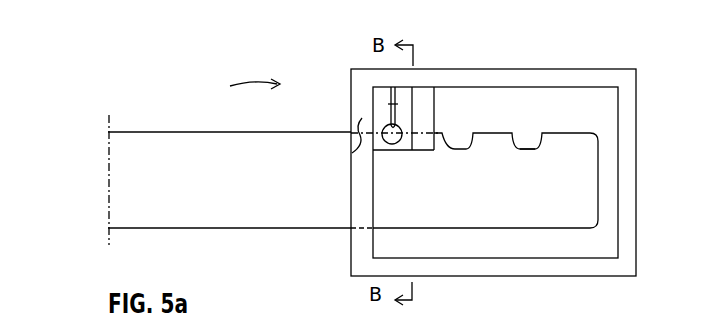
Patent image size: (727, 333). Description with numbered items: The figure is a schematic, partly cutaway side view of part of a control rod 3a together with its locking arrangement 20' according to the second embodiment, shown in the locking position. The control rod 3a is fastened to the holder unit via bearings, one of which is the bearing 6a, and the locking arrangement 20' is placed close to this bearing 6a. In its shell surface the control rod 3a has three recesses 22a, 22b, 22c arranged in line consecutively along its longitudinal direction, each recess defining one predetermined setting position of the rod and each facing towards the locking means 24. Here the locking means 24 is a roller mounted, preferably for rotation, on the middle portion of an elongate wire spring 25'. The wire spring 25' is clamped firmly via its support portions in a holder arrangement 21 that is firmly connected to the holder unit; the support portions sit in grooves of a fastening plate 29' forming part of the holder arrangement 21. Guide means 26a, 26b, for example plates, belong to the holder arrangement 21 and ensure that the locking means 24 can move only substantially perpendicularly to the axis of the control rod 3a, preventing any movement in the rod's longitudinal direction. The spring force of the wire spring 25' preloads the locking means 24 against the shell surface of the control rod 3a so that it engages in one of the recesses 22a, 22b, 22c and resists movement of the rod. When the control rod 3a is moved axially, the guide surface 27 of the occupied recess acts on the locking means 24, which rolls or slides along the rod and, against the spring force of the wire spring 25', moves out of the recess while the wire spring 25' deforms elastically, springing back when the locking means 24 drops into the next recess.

The control rod 3a is at (140, 140).
The bearing 6a is at (357, 229).
The locking arrangement 20' is at (238, 77).
The holder arrangement 21 is at (507, 73).
The recess 22a is at (403, 151).
The recess 22b is at (470, 144).
The recess 22c is at (545, 147).
The locking means 24 is at (383, 147).
The wire spring 25' is at (341, 114).
The guide means 26a is at (352, 153).
The guide means 26b is at (437, 108).
The guide surface 27 is at (533, 131).
The fastening plate 29' is at (349, 92).